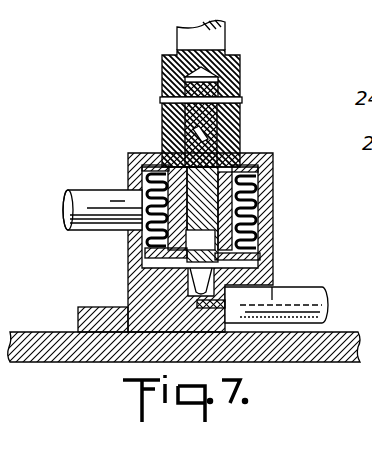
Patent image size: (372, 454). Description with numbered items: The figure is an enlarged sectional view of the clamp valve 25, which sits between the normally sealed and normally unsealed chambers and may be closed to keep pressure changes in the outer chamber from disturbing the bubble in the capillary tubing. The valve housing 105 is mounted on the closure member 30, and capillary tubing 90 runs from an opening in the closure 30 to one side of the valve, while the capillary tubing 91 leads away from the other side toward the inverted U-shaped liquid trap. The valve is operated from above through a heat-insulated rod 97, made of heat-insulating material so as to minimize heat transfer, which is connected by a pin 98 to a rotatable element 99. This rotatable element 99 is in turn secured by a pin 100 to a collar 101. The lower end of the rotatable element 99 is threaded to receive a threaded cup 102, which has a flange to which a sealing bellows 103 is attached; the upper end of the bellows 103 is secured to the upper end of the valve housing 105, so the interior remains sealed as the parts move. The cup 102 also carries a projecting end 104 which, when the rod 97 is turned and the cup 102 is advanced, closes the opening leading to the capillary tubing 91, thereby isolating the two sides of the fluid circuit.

The clamp valve 25 is at (313, 151).
The closure member 30 is at (51, 332).
The capillary tubing 90 is at (88, 191).
The capillary tubing section 91 is at (318, 288).
The heat-insulated rod 97 is at (241, 60).
The pin 98 is at (162, 100).
The rotatable element 99 is at (162, 119).
The pin 100 is at (193, 133).
The collar 101 is at (233, 130).
The threaded cup 102 is at (260, 222).
The sealing bellows 103 is at (262, 183).
The projecting end 104 is at (254, 261).
The valve housing 105 is at (131, 250).